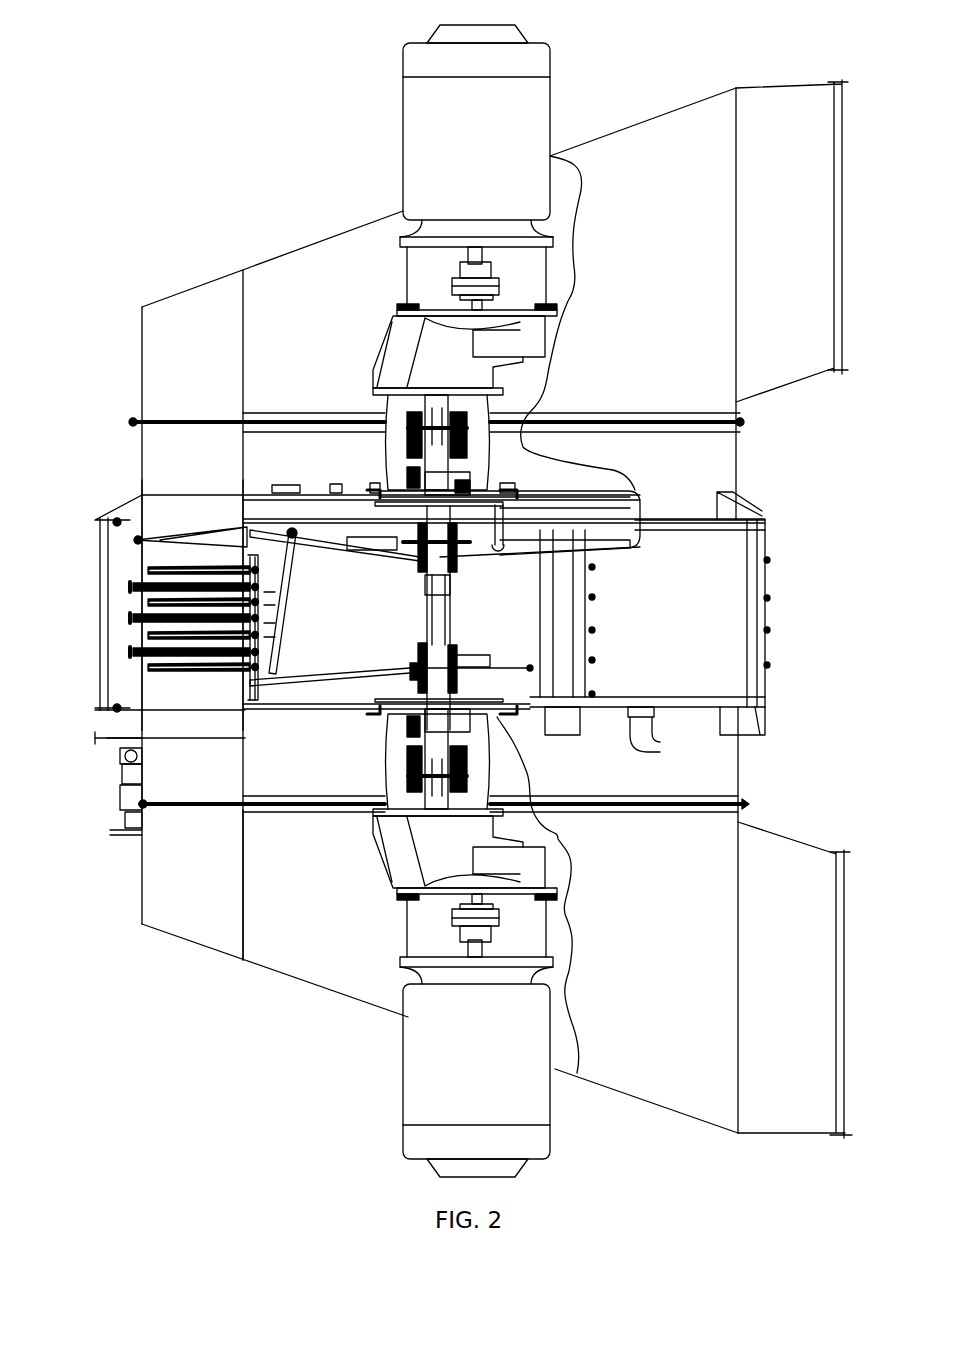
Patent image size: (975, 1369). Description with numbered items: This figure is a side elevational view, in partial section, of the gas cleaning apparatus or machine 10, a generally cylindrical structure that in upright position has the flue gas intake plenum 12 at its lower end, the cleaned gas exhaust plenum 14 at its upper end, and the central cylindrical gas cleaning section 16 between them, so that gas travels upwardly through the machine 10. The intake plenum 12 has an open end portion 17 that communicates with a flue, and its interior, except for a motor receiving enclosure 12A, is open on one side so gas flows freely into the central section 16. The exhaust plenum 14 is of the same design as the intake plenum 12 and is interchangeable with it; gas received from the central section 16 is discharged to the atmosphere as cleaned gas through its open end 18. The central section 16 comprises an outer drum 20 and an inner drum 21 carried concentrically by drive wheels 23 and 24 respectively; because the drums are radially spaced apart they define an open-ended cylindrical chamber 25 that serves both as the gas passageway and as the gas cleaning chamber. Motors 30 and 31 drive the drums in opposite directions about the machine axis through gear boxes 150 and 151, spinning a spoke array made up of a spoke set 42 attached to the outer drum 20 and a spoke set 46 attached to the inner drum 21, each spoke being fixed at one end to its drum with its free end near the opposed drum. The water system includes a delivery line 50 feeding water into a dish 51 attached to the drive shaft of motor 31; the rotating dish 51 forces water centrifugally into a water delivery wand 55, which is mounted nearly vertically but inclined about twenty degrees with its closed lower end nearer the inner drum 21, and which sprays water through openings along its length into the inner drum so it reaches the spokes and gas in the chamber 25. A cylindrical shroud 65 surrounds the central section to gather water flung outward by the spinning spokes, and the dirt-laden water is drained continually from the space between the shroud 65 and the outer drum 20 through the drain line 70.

The apparatus or machine 10 is at (145, 268).
The flue gas intake plenum 12 is at (292, 985).
The motor receiving enclosure 12A is at (246, 895).
The cleaned gas exhaust plenum 14 is at (283, 243).
The central cylindrical gas cleaning section 16 is at (728, 456).
The open end portion 17 is at (856, 979).
The open end 18 is at (846, 257).
The outer drum 20 is at (135, 543).
The inner drum 21 is at (245, 682).
The drive wheel 23 is at (340, 558).
The drive wheel 24 is at (400, 672).
The cylindrical chamber 25 is at (208, 512).
The motor 30 is at (402, 1098).
The motor 31 is at (396, 109).
The spoke set 42 is at (130, 650).
The spoke set 46 is at (272, 640).
The delivery line 50 is at (587, 500).
The dish 51 is at (545, 553).
The water delivery wand 55 is at (272, 600).
The cylindrical shroud 65 is at (95, 660).
The drain line 70 is at (115, 758).
The gear box 150 is at (381, 345).
The gear box 151 is at (386, 859).